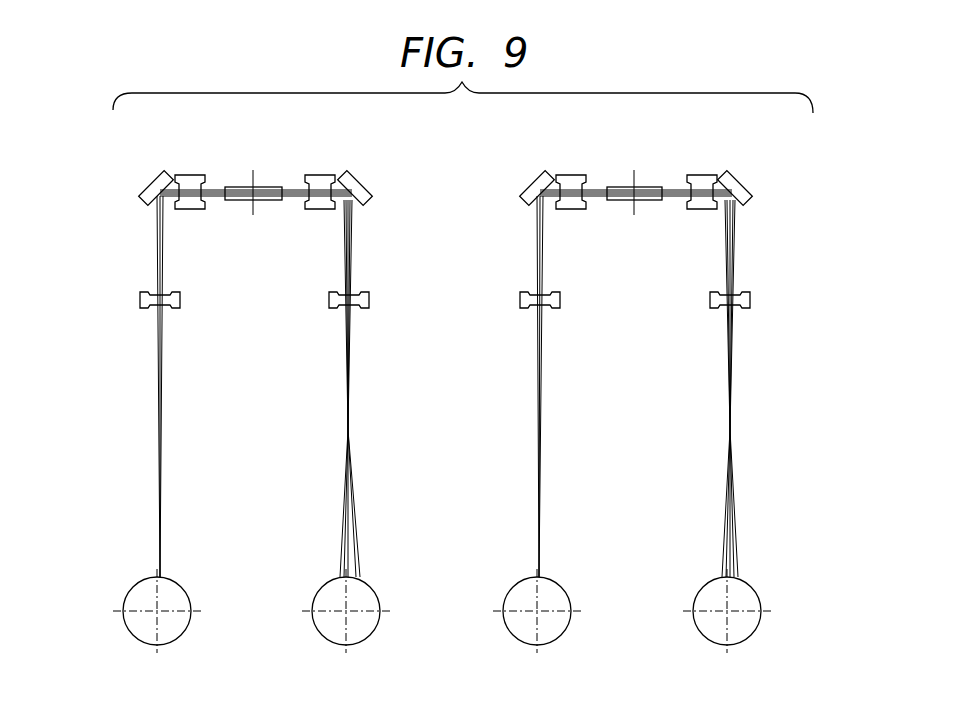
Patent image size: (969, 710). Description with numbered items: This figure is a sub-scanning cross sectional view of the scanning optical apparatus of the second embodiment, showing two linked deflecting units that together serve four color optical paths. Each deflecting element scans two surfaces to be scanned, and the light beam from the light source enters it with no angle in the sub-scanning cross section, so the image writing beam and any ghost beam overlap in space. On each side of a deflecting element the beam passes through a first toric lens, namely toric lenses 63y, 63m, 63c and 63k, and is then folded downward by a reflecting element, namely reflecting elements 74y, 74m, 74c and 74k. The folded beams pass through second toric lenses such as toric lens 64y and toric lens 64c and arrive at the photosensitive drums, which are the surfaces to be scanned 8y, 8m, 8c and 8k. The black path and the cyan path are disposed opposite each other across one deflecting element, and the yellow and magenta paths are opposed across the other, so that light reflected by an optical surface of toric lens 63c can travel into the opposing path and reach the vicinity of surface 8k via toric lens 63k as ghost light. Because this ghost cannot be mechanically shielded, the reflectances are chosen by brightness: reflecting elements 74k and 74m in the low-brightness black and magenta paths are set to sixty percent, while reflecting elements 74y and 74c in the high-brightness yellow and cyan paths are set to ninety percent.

The toric lens 63y is at (200, 174).
The toric lens 63m is at (310, 174).
The toric lens 63c is at (581, 174).
The toric lens 63k is at (697, 174).
The reflecting element 74y is at (147, 182).
The reflecting element 74m is at (361, 181).
The reflecting element 74c is at (529, 182).
The reflecting element 74k is at (745, 181).
The toric lens 64y is at (182, 300).
The toric lens 64c is at (562, 300).
The surface to be scanned 8y is at (176, 579).
The surface to be scanned 8m is at (365, 579).
The surface to be scanned 8c is at (556, 579).
The surface to be scanned 8k is at (751, 579).